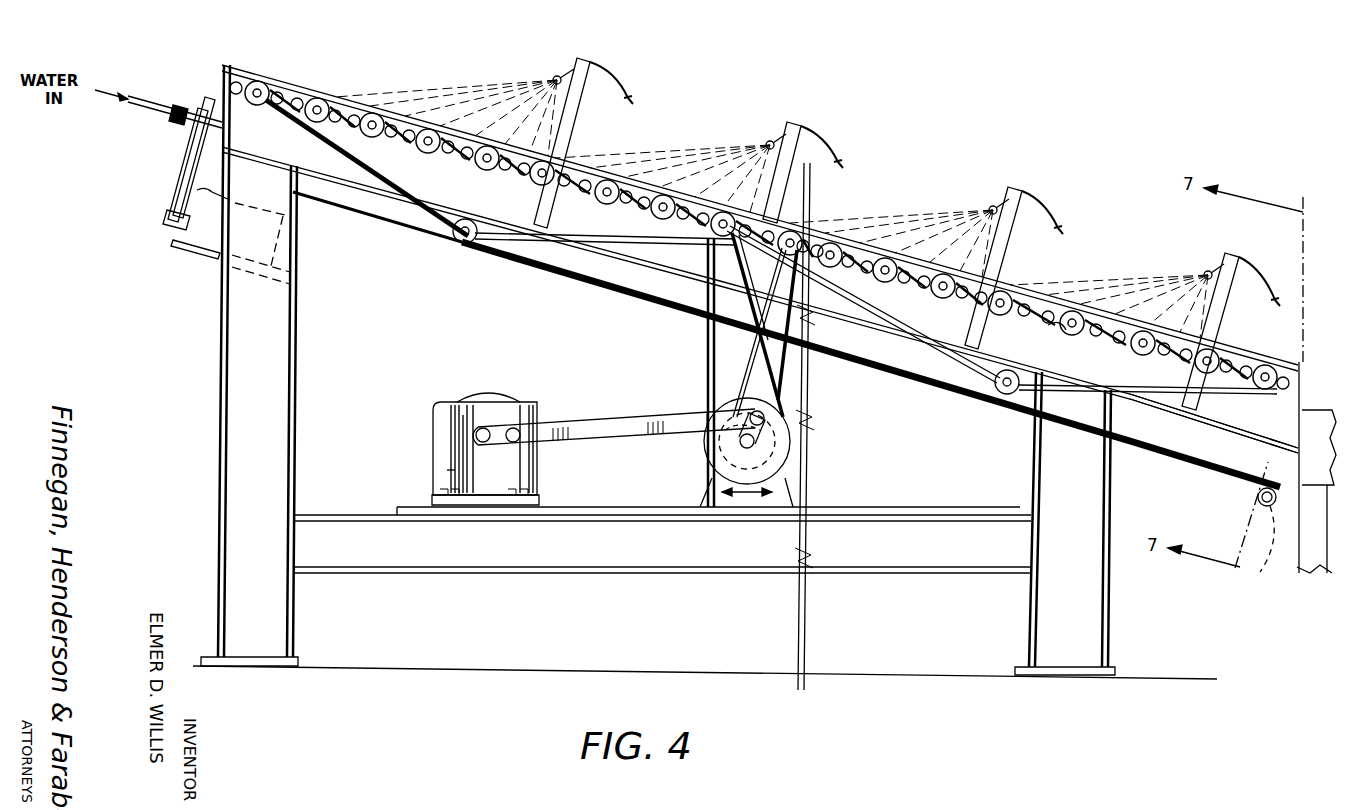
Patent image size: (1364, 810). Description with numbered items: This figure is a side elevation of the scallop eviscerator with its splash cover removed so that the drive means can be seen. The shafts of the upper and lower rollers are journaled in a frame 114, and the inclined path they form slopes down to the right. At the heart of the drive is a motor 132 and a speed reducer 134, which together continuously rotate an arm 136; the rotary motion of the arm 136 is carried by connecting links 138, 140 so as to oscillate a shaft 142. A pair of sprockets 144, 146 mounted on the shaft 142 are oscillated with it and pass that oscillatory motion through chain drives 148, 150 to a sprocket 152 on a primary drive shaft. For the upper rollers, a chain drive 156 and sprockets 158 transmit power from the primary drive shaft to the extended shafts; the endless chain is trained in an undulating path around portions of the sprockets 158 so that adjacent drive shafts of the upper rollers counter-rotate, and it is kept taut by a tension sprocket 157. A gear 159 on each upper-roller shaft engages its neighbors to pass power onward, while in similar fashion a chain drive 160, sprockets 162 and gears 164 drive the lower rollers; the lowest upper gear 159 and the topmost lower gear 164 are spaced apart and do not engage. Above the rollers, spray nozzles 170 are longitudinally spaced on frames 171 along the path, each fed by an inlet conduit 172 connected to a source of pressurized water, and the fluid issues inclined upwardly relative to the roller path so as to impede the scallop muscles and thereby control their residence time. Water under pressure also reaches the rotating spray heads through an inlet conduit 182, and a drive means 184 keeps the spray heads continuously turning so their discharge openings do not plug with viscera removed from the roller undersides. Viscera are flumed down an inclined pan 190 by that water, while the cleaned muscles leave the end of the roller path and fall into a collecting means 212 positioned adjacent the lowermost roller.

The frame 114 is at (705, 372).
The motor 132 is at (538, 466).
The speed reducer 134 is at (447, 463).
The arm 136 is at (492, 427).
The connecting link 138 is at (612, 427).
The connecting link 140 is at (772, 420).
The shaft 142 is at (770, 448).
The sprocket 144 is at (790, 470).
The sprocket 146 is at (706, 458).
The chain drive 148 is at (705, 330).
The chain drive 150 is at (790, 366).
The sprocket 152 is at (1258, 544).
The chain drive 156 is at (612, 240).
The tension sprocket 157 is at (455, 243).
The sprocket 158 is at (475, 143).
The gear 159 is at (243, 82).
The chain drive 160 is at (940, 352).
The sprocket 162 is at (1058, 325).
The gear 164 is at (975, 305).
The spray nozzle 170 is at (557, 76).
The frame 171 is at (578, 148).
The inlet conduit 172 is at (620, 90).
The inlet conduit 182 is at (170, 104).
The drive means 184 is at (172, 158).
The inclined pan 190 is at (1180, 462).
The collecting means 212 is at (1275, 446).